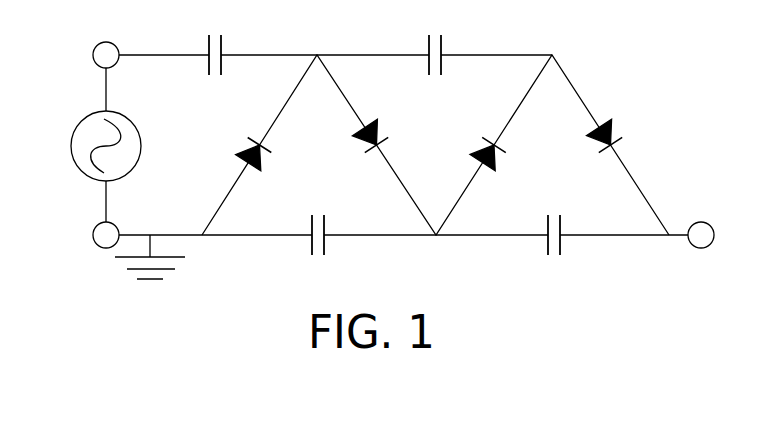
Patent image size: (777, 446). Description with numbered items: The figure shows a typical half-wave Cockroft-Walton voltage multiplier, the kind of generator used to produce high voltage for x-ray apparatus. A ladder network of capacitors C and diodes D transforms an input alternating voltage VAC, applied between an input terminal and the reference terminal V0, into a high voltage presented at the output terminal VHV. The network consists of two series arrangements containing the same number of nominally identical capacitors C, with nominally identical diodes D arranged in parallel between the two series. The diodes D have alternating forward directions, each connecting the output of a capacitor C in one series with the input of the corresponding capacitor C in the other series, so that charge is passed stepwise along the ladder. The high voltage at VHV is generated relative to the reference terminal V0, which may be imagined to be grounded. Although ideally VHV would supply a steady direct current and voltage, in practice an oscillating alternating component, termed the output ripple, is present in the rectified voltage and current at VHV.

The capacitor C is at (385, 150).
The diode D is at (630, 131).
The input alternating voltage VAC is at (83, 146).
The reference terminal V0 is at (90, 236).
The output terminal VHV is at (701, 254).